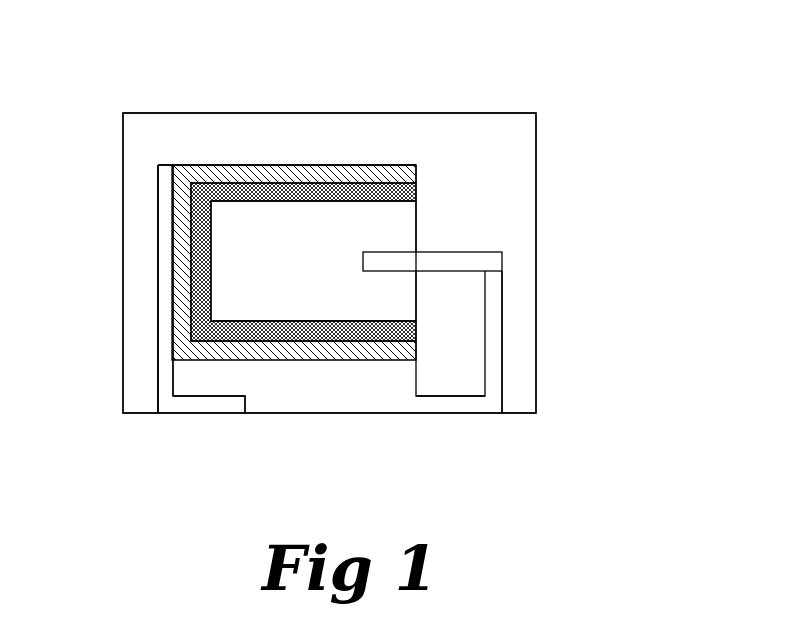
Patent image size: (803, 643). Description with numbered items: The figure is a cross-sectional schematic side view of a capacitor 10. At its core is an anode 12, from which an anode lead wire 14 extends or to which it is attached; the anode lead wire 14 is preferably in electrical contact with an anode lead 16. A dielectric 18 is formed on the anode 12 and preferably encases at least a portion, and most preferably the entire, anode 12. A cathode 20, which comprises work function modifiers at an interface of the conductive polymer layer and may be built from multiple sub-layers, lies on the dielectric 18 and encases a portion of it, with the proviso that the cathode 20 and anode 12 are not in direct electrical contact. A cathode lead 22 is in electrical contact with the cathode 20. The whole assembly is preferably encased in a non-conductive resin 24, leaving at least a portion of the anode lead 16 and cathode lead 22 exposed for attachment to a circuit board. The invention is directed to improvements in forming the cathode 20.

The capacitor 10 is at (421, 94).
The anode 12 is at (375, 233).
The anode lead wire 14 is at (433, 263).
The anode lead 16 is at (492, 317).
The dielectric 18 is at (365, 190).
The cathode 20 is at (272, 172).
The cathode lead 22 is at (163, 285).
The non-conductive resin 24 is at (180, 140).